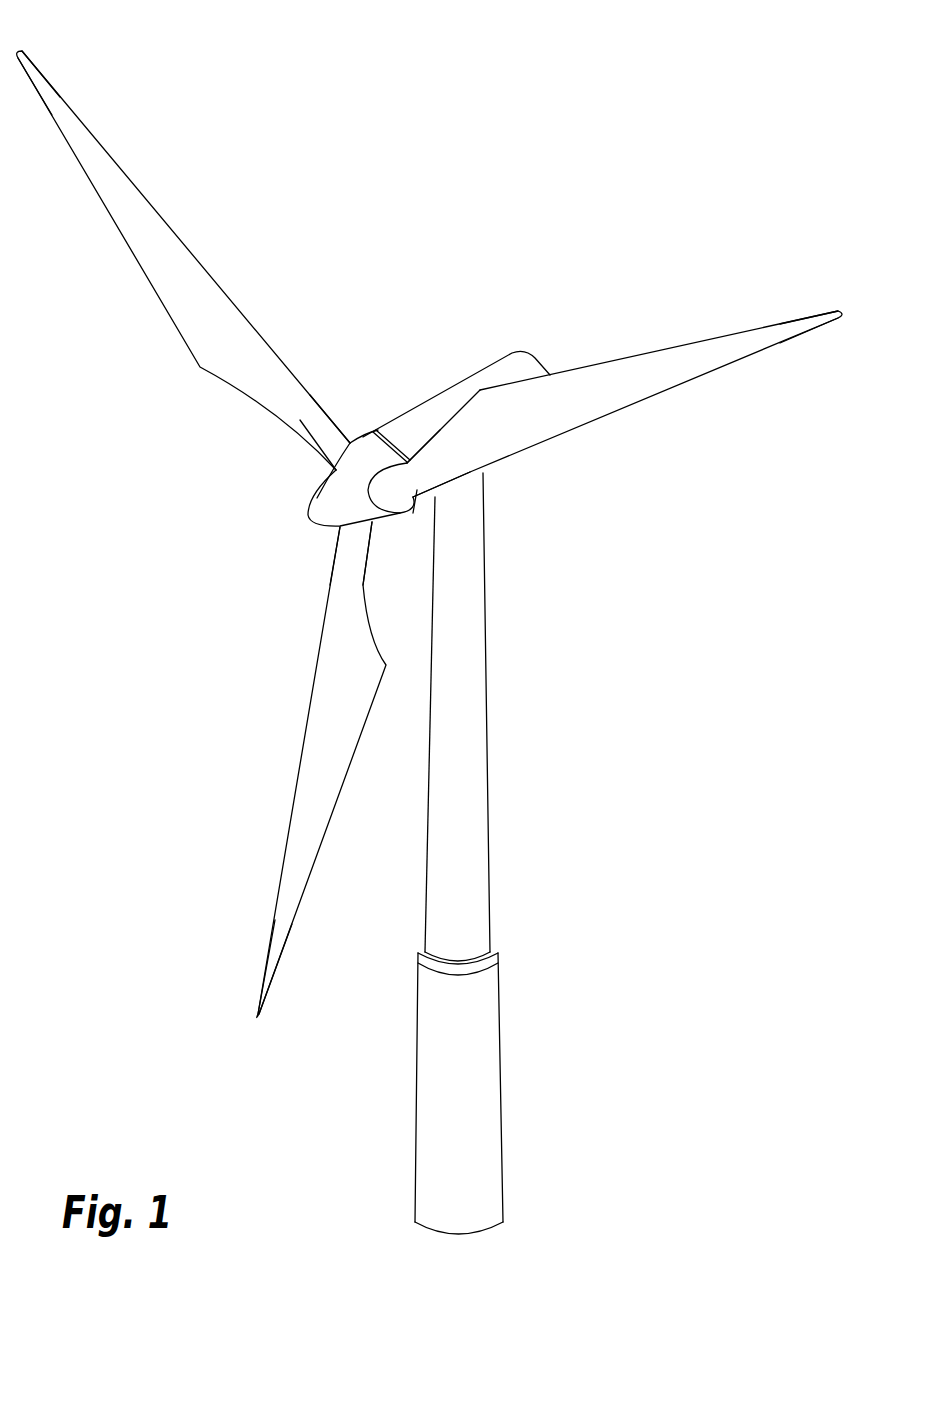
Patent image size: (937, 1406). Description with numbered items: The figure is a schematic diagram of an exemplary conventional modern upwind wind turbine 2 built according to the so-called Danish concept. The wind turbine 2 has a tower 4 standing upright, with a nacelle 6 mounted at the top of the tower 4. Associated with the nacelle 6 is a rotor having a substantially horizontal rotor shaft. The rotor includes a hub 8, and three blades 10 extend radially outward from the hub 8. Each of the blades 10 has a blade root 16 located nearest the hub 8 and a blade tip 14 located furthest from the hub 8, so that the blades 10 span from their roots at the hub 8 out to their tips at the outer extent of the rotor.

The wind turbine 2 is at (596, 795).
The tower 4 is at (478, 714).
The nacelle 6 is at (420, 415).
The hub 8 is at (317, 498).
The blade 10 is at (218, 352).
The blade tip 14 is at (72, 106).
The blade root 16 is at (330, 469).